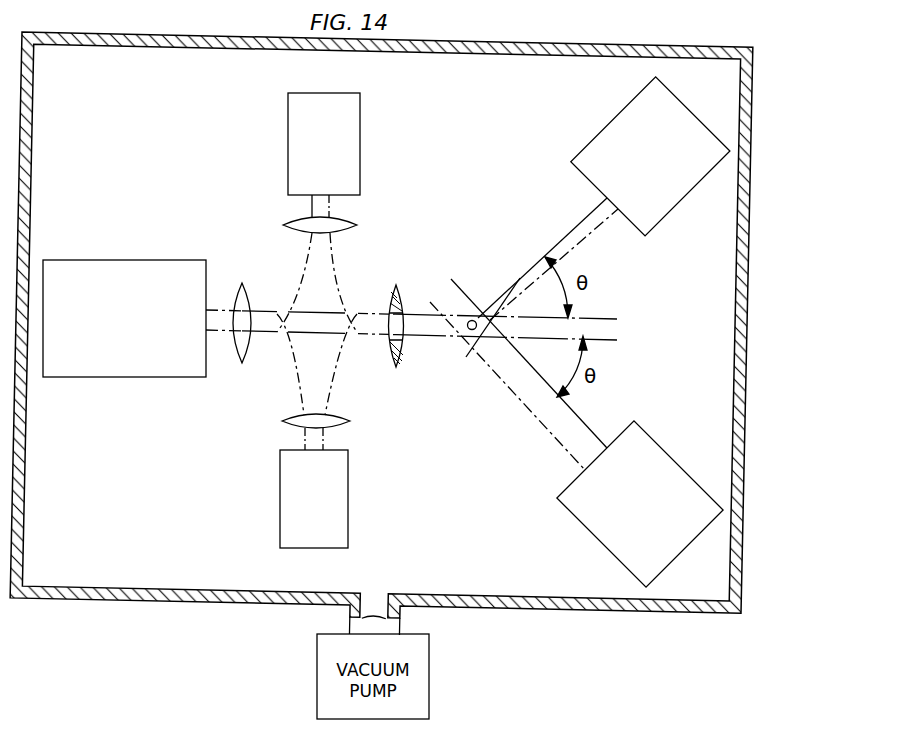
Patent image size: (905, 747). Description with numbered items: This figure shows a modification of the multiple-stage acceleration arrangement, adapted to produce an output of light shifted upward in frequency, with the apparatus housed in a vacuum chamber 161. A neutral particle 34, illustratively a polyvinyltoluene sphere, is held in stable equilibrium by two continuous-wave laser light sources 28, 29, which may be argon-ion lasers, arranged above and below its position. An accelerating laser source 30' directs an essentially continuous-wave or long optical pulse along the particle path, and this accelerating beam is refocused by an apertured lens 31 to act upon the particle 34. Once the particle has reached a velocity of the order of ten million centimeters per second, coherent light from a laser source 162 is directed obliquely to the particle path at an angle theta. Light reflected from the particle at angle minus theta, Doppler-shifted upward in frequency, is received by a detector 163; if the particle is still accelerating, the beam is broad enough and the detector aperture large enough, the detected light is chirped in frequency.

The continuous-wave laser light source 28 is at (361, 143).
The continuous-wave laser light source 29 is at (349, 518).
The accelerating laser source 30' is at (124, 302).
The apertured lens 31 is at (394, 284).
The particle 34 is at (482, 327).
The vacuum chamber 161 is at (517, 589).
The laser source 162 is at (581, 515).
The detector 163 is at (657, 213).